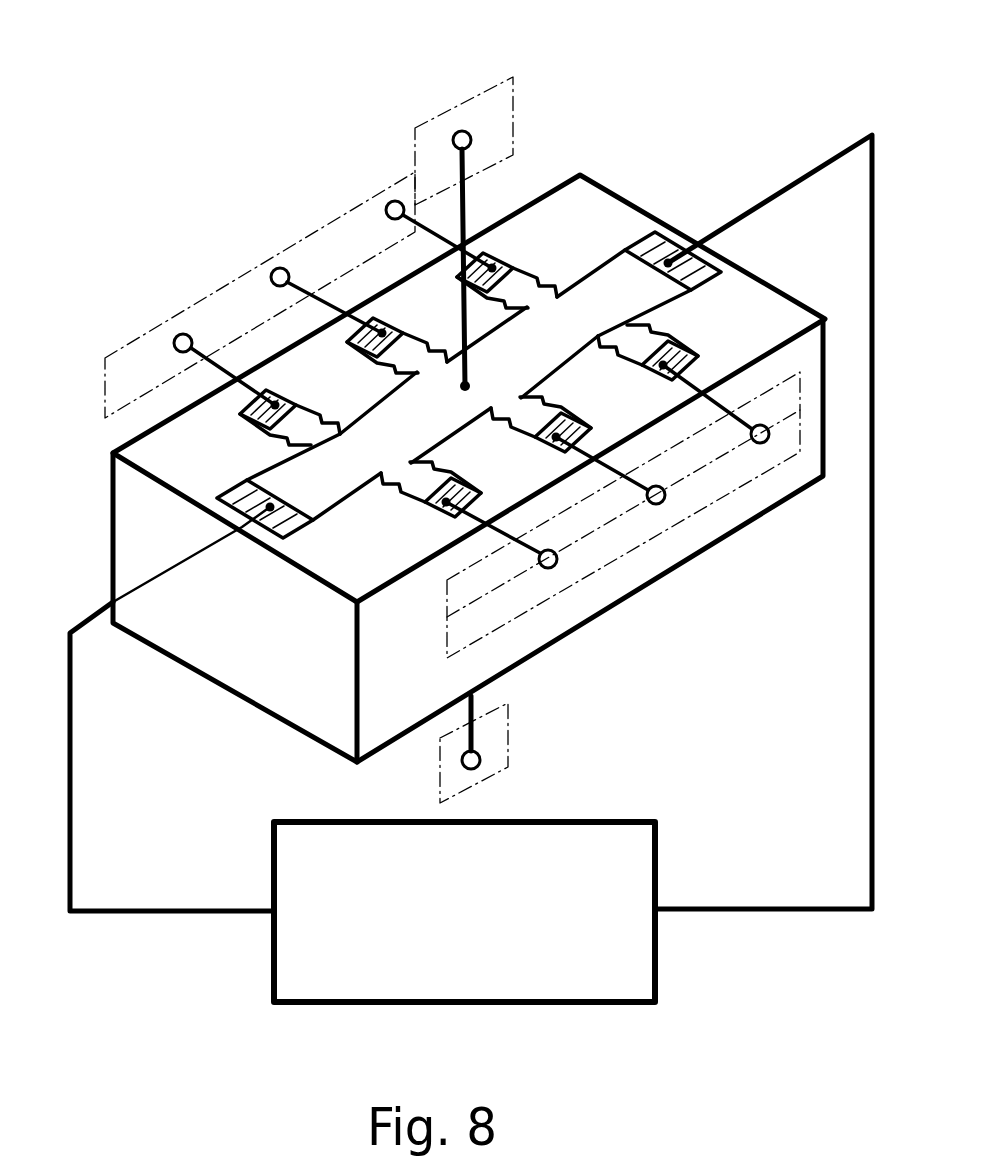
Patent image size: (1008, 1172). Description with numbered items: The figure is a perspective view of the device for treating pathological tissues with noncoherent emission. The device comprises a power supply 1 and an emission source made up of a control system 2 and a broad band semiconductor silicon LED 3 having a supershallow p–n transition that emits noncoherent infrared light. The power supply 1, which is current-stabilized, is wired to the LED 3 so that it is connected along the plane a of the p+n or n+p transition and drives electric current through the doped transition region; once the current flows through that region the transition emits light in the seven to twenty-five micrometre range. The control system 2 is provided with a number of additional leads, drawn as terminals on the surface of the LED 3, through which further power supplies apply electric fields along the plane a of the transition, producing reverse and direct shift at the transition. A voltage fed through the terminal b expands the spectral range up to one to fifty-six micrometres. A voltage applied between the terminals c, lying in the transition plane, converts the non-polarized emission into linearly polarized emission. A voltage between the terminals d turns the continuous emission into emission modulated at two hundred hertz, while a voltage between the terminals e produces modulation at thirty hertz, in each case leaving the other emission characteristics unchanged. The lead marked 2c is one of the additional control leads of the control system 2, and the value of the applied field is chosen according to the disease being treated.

The power supply 1 is at (471, 568).
The control system 2 is at (467, 414).
The control electrode terminal 2c is at (251, 213).
The broad band semiconductor silicon LED 3 is at (510, 467).
The plane of p+n transition a is at (556, 284).
The terminal b is at (523, 388).
The terminals c is at (660, 543).
The terminals d is at (378, 482).
The terminals e is at (582, 302).